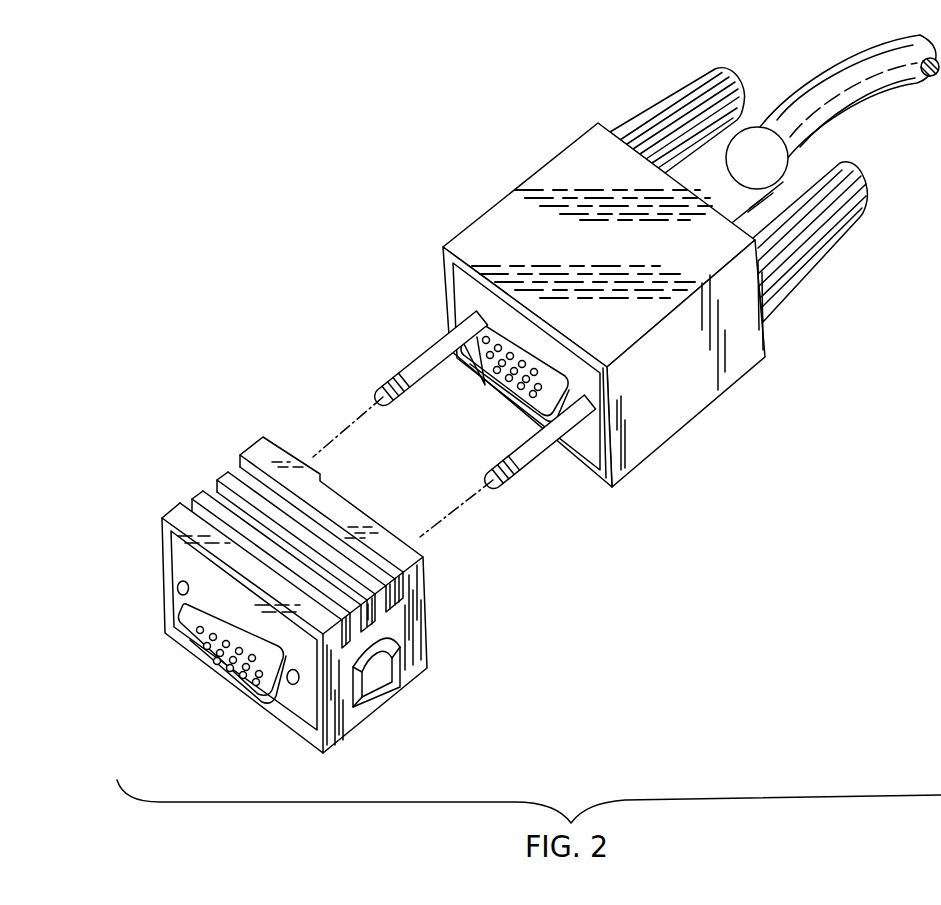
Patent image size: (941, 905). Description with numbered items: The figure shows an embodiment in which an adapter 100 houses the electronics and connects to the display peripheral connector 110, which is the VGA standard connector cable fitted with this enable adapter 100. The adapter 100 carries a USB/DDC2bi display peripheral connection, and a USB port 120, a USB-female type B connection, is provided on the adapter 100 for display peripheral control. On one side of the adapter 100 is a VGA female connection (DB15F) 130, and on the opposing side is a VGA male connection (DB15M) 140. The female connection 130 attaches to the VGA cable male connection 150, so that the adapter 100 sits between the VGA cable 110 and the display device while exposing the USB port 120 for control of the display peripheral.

The adapter 100 is at (199, 489).
The display peripheral connector 110 is at (740, 368).
The USB port 120 is at (410, 690).
The VGA female connection (DB15F) 130 is at (358, 494).
The VGA male connection (DB15M) 140 is at (222, 690).
The VGA cable male connection 150 is at (470, 370).